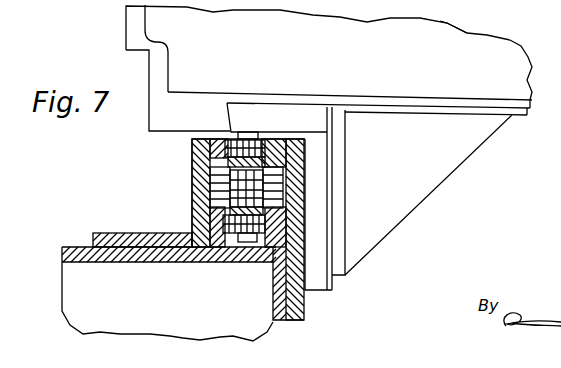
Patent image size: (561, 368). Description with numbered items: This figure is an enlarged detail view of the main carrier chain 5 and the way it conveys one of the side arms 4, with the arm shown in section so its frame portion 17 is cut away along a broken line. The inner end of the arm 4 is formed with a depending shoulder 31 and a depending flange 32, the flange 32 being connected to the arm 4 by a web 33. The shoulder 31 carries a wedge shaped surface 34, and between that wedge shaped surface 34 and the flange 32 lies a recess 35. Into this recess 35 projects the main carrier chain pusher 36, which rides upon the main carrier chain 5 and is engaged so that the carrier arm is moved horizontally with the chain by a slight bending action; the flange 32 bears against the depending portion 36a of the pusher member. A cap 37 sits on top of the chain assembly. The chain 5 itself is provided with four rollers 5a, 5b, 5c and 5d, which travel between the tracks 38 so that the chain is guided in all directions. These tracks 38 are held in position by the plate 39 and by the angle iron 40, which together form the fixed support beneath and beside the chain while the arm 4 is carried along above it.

The side arm 4 is at (512, 65).
The frame body 17 is at (471, 16).
The depending shoulder 31 is at (177, 118).
The depending flange 32 is at (347, 149).
The web 33 is at (445, 164).
The wedge shaped surface 34 is at (234, 116).
The recess 35 is at (290, 102).
The main carrier chain pusher 36 is at (323, 116).
The depending portion of pusher member 36a is at (313, 214).
The cap nut 37 is at (250, 133).
The tracks 38 is at (208, 247).
The plate 39 is at (302, 305).
The angle iron 40 is at (157, 234).
The main carrier chain 5 is at (230, 176).
The roller 5a is at (212, 192).
The roller 5b is at (277, 143).
The roller 5c is at (263, 177).
The roller 5d is at (257, 242).